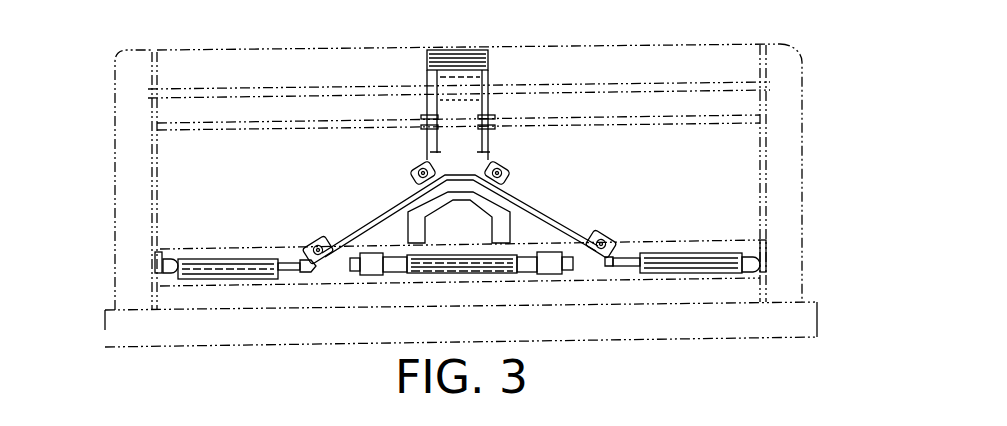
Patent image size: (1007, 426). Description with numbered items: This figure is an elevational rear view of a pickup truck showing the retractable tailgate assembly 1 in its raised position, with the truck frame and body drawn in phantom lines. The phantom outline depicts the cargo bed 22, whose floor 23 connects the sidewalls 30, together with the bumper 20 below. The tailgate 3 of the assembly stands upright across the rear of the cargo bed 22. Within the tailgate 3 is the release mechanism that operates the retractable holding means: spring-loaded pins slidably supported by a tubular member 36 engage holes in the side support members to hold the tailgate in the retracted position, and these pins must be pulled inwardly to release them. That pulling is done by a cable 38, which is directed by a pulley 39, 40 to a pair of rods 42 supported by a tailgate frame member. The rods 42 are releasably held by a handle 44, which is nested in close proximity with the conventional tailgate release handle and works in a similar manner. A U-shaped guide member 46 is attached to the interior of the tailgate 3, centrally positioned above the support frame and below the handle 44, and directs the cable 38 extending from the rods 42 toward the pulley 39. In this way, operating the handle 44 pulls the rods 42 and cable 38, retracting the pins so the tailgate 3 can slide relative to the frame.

The retractable tailgate assembly 1 is at (106, 127).
The tailgate 3 is at (212, 60).
The bumper 20 is at (818, 318).
The cargo bed 22 is at (810, 107).
The floor 23 is at (732, 290).
The sidewalls 30 is at (133, 200).
The tubular member 36 is at (693, 252).
The cable 38 is at (548, 217).
The pulley 39 is at (608, 233).
The pulley 40 is at (507, 173).
The rods 42 is at (487, 90).
The handle 44 is at (460, 55).
The U-shaped guide member 46 is at (430, 198).